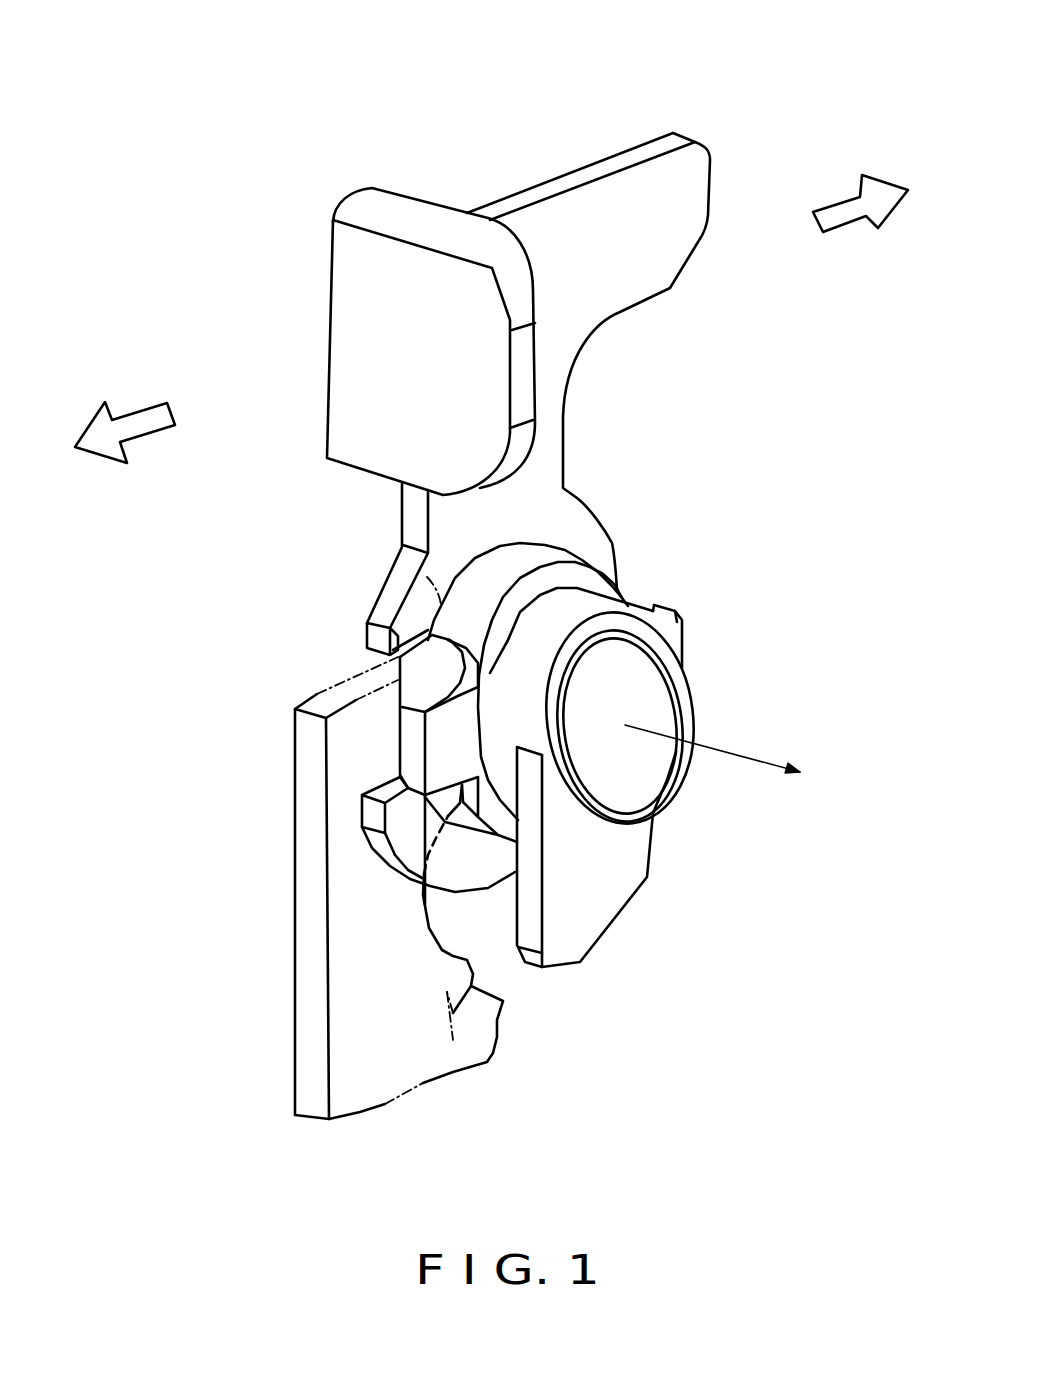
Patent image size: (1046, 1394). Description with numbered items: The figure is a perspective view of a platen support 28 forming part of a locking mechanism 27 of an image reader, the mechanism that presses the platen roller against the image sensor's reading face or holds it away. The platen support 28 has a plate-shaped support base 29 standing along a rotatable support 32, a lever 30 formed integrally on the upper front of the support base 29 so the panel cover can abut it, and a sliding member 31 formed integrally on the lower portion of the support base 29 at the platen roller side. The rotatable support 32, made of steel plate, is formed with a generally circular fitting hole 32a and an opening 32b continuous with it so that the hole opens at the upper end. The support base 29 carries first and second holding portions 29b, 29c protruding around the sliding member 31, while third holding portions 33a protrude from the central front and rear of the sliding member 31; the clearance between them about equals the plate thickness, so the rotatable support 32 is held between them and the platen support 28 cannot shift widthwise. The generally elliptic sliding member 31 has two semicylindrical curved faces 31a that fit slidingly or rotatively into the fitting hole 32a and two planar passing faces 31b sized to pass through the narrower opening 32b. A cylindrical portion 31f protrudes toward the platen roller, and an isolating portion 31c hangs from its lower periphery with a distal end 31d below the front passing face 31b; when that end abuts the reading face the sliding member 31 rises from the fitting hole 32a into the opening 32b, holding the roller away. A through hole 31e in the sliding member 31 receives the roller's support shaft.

The locking mechanism 27 is at (758, 382).
The platen support 28 is at (683, 118).
The support base 29 is at (538, 380).
The first holding portion 29b is at (469, 587).
The second holding portion 29c is at (338, 834).
The lever 30 is at (387, 341).
The sliding member 31 is at (593, 670).
The curved face 31a is at (545, 693).
The passing face 31b is at (641, 718).
The isolating portion 31c is at (639, 861).
The distal end 31d is at (557, 903).
The through hole 31e is at (654, 738).
The cylindrical portion 31f is at (694, 728).
The rotatable support 32 is at (291, 888).
The fitting hole 32a is at (463, 1012).
The opening 32b is at (352, 569).
The third holding portion 33a is at (495, 733).